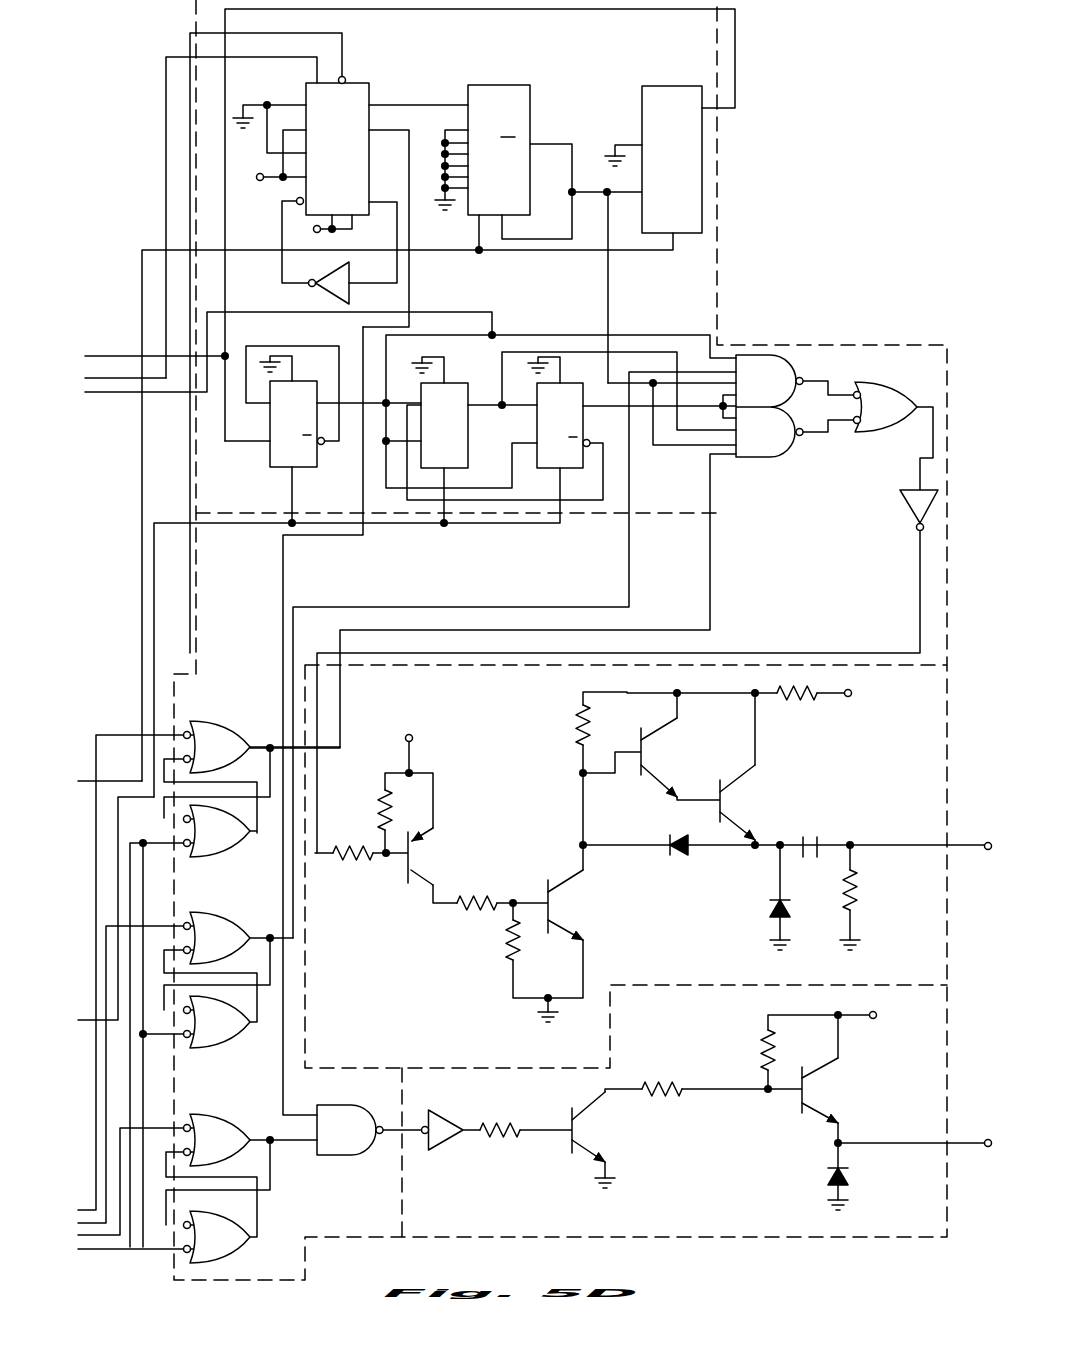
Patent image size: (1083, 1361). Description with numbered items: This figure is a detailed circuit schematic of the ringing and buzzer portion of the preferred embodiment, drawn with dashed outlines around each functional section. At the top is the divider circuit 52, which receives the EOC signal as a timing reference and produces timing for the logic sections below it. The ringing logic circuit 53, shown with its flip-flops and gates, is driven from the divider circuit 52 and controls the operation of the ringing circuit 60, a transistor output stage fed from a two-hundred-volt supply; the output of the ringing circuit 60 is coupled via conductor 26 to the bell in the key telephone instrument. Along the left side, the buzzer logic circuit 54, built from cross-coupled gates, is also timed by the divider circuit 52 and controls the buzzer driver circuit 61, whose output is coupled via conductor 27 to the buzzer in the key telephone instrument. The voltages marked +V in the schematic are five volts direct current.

The divider circuit 52 is at (720, 215).
The ringing logic circuit 53 is at (876, 340).
The buzzer logic circuit 54 is at (265, 1284).
The ringing circuit 60 is at (952, 720).
The buzzer driver circuit 61 is at (808, 1242).
The conductor 26 is at (965, 844).
The conductor 27 is at (964, 1140).